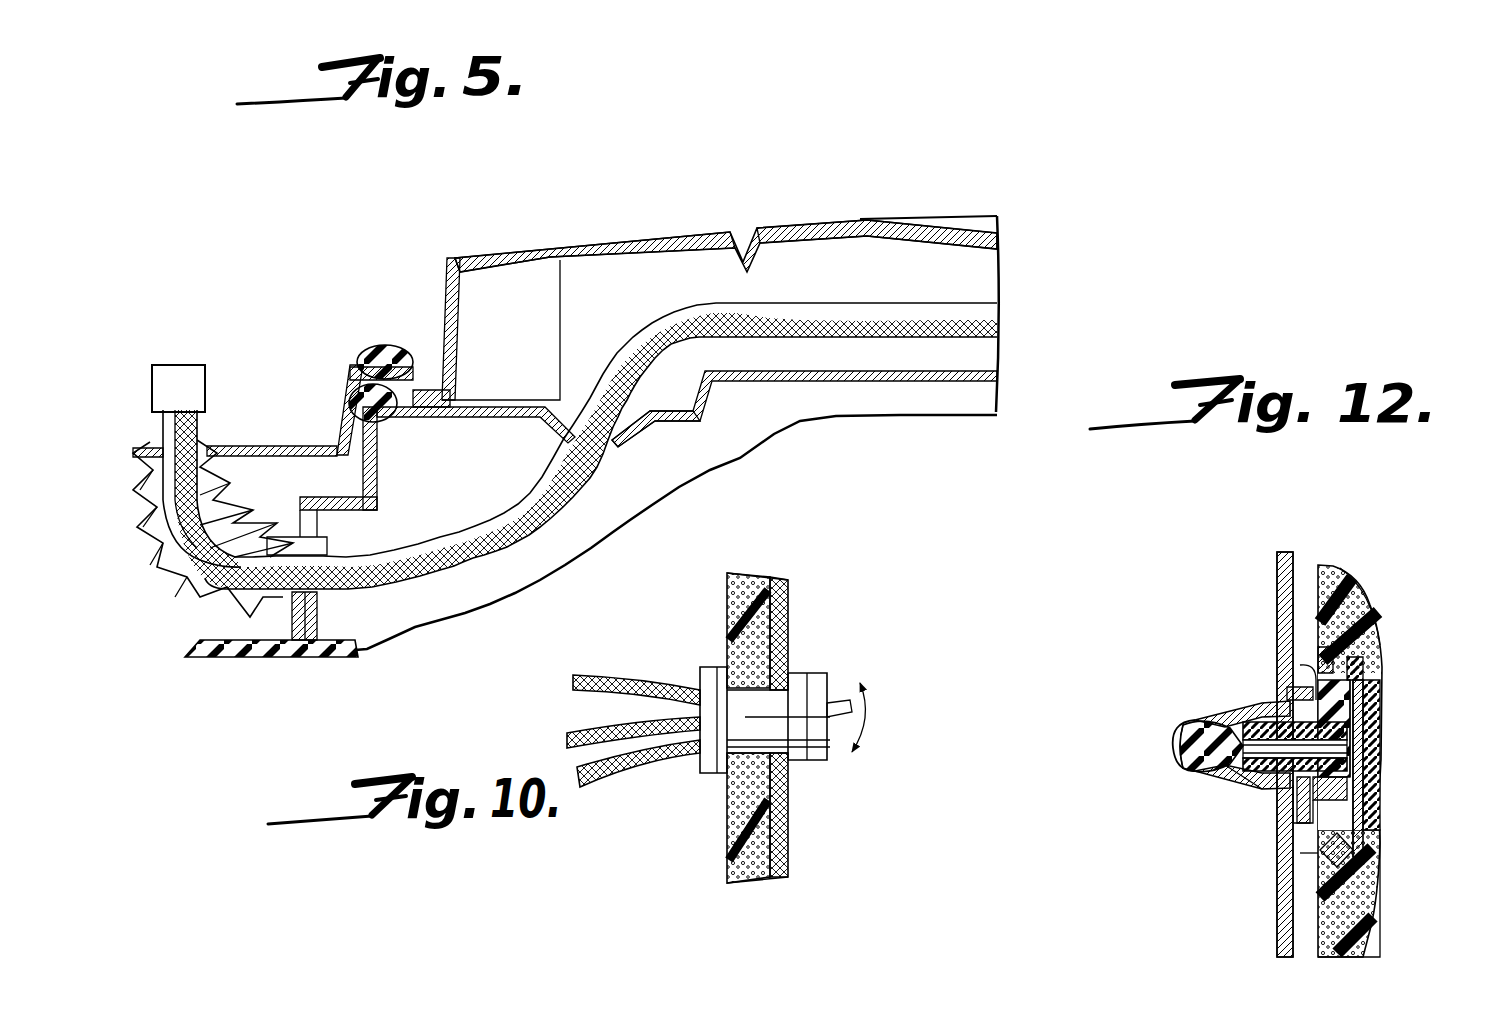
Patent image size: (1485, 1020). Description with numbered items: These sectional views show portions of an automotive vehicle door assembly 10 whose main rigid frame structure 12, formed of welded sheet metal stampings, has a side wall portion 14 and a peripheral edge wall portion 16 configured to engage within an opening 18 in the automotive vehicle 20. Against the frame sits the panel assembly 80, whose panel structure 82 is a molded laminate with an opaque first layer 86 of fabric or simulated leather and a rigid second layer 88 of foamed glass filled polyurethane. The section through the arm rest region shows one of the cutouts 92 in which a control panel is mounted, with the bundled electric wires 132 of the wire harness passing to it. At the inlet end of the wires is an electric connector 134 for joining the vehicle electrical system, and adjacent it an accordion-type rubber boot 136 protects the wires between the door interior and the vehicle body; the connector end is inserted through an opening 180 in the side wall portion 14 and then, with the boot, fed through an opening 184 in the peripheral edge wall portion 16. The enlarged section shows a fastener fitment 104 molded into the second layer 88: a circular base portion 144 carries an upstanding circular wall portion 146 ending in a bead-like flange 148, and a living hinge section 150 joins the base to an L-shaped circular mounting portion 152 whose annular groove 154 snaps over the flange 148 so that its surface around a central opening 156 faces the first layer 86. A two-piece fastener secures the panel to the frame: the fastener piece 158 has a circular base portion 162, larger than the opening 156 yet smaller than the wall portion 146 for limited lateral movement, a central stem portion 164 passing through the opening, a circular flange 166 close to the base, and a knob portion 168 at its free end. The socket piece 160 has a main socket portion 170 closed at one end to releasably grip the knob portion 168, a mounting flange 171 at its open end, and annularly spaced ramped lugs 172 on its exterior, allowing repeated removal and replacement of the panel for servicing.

In FIG. 5, the door assembly 10 is at (697, 185).
In FIG. 5, the rigid frame structure 12 is at (1006, 379).
In FIG. 12, the rigid frame structure 12 is at (1286, 548).
In FIG. 5, the side wall portion 14 is at (777, 382).
In FIG. 12, the side wall portion 14 is at (1277, 607).
In FIG. 5, the peripheral edge wall portion 16 is at (318, 600).
In FIG. 5, the opening 18 is at (355, 435).
In FIG. 5, the automotive vehicle 20 is at (272, 446).
In FIG. 5, the panel assembly 80 is at (872, 196).
In FIG. 10, the panel structure 82 is at (792, 603).
In FIG. 12, the panel structure 82 is at (1348, 565).
In FIG. 5, the first layer 86 is at (550, 248).
In FIG. 10, the first layer 86 is at (792, 628).
In FIG. 5, the second layer 88 is at (497, 266).
In FIG. 10, the second layer 88 is at (727, 620).
In FIG. 10, the cutouts 92 is at (790, 678).
In FIG. 12, the fastener fitment 104 is at (1313, 853).
In FIG. 5, the electric wires 132 is at (572, 474).
In FIG. 5, the electric connector 134 is at (192, 380).
In FIG. 5, the rubber boot 136 is at (196, 592).
In FIG. 12, the circular base portion 144 is at (1374, 723).
In FIG. 12, the circular wall portion 146 is at (1371, 685).
In FIG. 12, the bead-like flange 148 is at (1364, 853).
In FIG. 12, the living hinge section 150 is at (1379, 614).
In FIG. 12, the circular mounting portion 152 is at (1320, 843).
In FIG. 12, the annular groove 154 is at (1320, 663).
In FIG. 12, the central opening 156 is at (1297, 788).
In FIG. 12, the fastener piece 158 is at (1173, 767).
In FIG. 12, the socket piece 160 is at (1213, 713).
In FIG. 12, the circular base portion 162 is at (1374, 791).
In FIG. 12, the central stem portion 164 is at (1367, 761).
In FIG. 12, the circular flange 166 is at (1313, 673).
In FIG. 12, the knob portion 168 is at (1180, 732).
In FIG. 12, the main socket portion 170 is at (1227, 777).
In FIG. 12, the mounting flange 171 is at (1287, 693).
In FIG. 12, the ramped lugs 172 is at (1267, 790).
In FIG. 5, the opening 180 is at (616, 441).
In FIG. 5, the opening 184 is at (320, 540).